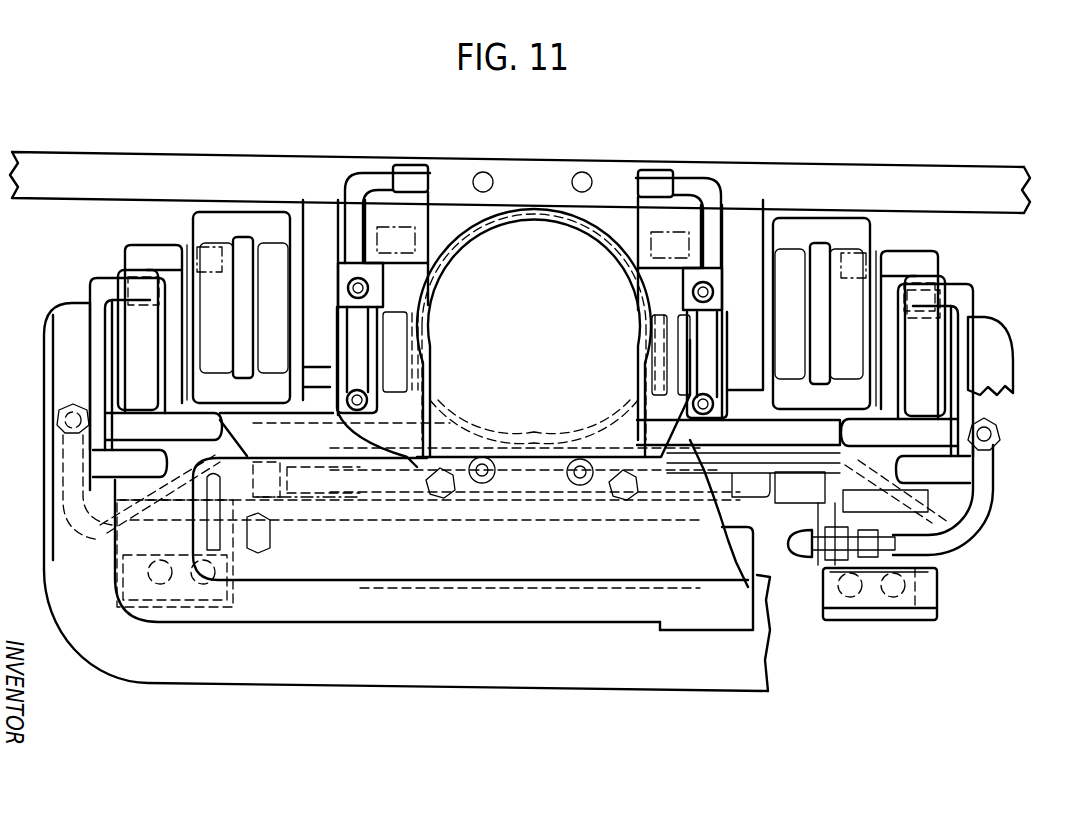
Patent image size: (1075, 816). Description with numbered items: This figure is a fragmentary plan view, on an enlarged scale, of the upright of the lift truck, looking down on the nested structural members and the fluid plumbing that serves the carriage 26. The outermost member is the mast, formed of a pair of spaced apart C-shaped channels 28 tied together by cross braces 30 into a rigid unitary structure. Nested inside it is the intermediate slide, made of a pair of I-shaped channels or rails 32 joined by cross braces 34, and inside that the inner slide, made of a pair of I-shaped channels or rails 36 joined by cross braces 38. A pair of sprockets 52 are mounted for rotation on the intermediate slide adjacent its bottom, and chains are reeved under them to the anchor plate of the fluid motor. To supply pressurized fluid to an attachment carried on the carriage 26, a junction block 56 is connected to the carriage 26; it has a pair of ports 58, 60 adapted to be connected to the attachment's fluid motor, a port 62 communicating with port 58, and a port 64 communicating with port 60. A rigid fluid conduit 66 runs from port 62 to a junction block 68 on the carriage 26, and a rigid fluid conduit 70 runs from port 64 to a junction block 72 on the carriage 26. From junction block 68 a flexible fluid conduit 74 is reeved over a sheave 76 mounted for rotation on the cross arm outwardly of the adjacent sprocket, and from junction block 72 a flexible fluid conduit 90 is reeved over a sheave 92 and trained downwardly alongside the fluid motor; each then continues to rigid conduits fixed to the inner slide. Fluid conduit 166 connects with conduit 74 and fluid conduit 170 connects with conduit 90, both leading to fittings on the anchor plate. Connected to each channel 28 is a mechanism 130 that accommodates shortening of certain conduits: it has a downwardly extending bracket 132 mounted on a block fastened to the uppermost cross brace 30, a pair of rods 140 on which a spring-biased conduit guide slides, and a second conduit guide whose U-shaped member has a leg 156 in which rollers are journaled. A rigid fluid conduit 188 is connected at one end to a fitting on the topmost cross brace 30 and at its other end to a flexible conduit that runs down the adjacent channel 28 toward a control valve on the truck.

The carriage 26 is at (829, 180).
The C-shaped channels 28 is at (960, 310).
The cross braces 30 is at (372, 670).
The I-shaped channels or rails 32 is at (923, 270).
The cross braces 34 is at (330, 607).
The I-shaped channels or rails 36 is at (853, 232).
The cross braces 38 is at (270, 568).
The sprockets 52 is at (758, 497).
The junction block 56 is at (533, 178).
The port 58 is at (483, 172).
The port 60 is at (582, 172).
The port 62 is at (428, 163).
The port 64 is at (642, 170).
The rigid fluid conduit 66 is at (370, 182).
The junction block 68 is at (345, 277).
The rigid fluid conduit 70 is at (697, 183).
The junction block 72 is at (720, 300).
The flexible fluid conduit 74 is at (345, 345).
The sheave 76 is at (393, 370).
The flexible fluid conduit 90 is at (707, 362).
The sheave 92 is at (667, 360).
The mechanism 130 is at (945, 590).
The bracket 132 is at (925, 618).
The rods 140 is at (871, 620).
The leg 156 is at (942, 522).
The fluid conduit 166 is at (463, 410).
The fluid conduit 170 is at (600, 408).
The rigid fluid conduit 188 is at (985, 498).